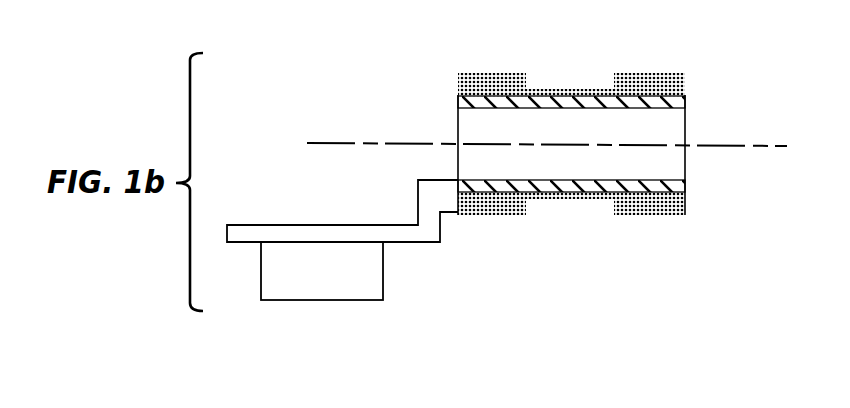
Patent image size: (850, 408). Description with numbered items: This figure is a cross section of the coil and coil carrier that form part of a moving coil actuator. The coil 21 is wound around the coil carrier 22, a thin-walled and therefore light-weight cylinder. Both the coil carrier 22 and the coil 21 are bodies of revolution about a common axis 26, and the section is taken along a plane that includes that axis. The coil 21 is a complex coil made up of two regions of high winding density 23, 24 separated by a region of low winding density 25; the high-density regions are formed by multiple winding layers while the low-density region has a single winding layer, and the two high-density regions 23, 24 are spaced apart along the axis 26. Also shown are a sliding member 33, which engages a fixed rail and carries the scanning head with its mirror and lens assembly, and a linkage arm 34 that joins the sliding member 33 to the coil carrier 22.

The coil 21 is at (603, 111).
The coil carrier 22 is at (685, 101).
The region of high winding density 23 is at (457, 53).
The region of high winding density 24 is at (615, 54).
The region of low winding density 25 is at (527, 72).
The common axis 26 is at (752, 145).
The sliding member 33 is at (383, 287).
The linkage arm 34 is at (418, 193).